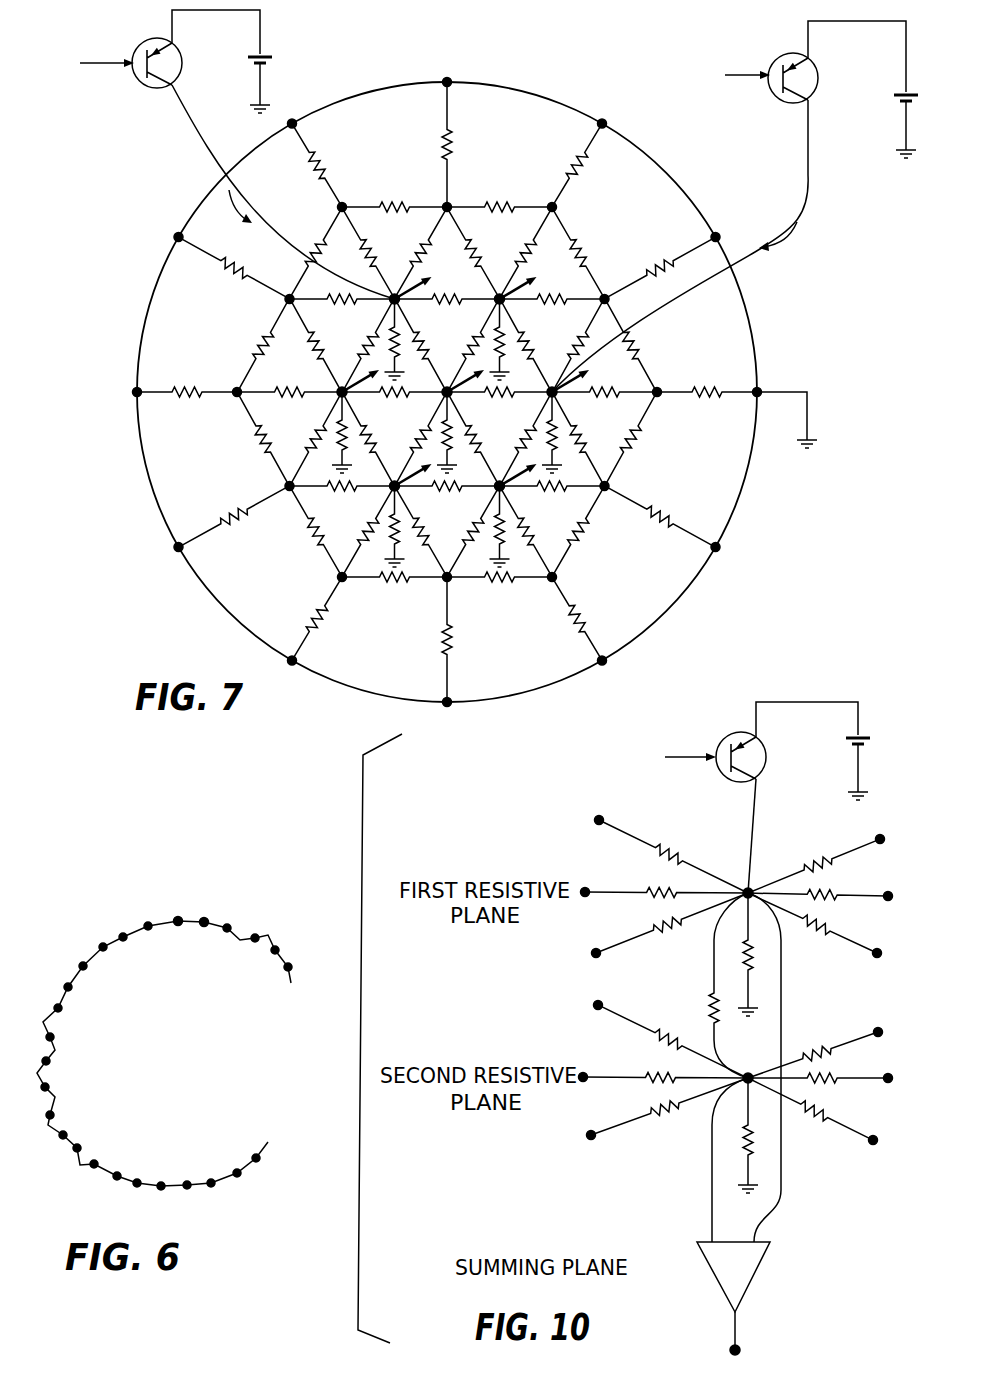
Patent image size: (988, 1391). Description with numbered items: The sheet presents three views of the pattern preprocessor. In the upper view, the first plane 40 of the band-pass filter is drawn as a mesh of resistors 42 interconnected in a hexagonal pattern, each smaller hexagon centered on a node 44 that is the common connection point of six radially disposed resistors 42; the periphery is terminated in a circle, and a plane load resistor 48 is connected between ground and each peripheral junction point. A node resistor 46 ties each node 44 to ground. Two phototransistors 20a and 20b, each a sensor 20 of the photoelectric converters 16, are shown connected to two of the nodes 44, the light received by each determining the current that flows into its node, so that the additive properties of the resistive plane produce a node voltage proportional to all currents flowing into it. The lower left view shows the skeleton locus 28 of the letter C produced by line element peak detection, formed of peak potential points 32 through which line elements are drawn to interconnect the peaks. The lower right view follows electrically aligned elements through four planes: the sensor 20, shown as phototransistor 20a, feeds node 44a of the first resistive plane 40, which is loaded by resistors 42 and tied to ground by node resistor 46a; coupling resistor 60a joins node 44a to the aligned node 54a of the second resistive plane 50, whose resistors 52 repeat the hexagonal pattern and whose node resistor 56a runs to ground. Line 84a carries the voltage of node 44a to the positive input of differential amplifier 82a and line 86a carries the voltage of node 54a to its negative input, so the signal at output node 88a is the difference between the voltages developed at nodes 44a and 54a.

In FIG. 7, the first plane 40 is at (150, 550).
In FIG. 10, the first plane 40 is at (684, 886).
In FIG. 7, the plane load resistor 48 is at (577, 162).
In FIG. 7, the resistors 42 is at (267, 330).
In FIG. 10, the resistors 42 is at (658, 891).
In FIG. 7, the nodes 44 is at (400, 301).
In FIG. 7, the node resistor 46 is at (391, 341).
In FIG. 7, the phototransistor 20b is at (155, 88).
In FIG. 7, the phototransistor 20a is at (770, 88).
In FIG. 10, the sensor 20 is at (717, 767).
In FIG. 6, the skeleton locus 28 is at (68, 956).
In FIG. 6, the peak potential points 32 is at (204, 925).
In FIG. 10, the photoelectric converters 16 is at (545, 783).
In FIG. 10, the node 44a is at (748, 893).
In FIG. 10, the node resistor 46a is at (752, 948).
In FIG. 10, the coupling resistor 60a is at (713, 1004).
In FIG. 10, the line 84a is at (781, 1154).
In FIG. 10, the second plane 50 is at (684, 1072).
In FIG. 10, the resistors 52 is at (660, 1109).
In FIG. 10, the node 54a is at (757, 1074).
In FIG. 10, the node resistor 56a is at (743, 1136).
In FIG. 10, the line 86a is at (712, 1233).
In FIG. 10, the differential amplifier 82a is at (758, 1276).
In FIG. 10, the output node 88a is at (735, 1350).